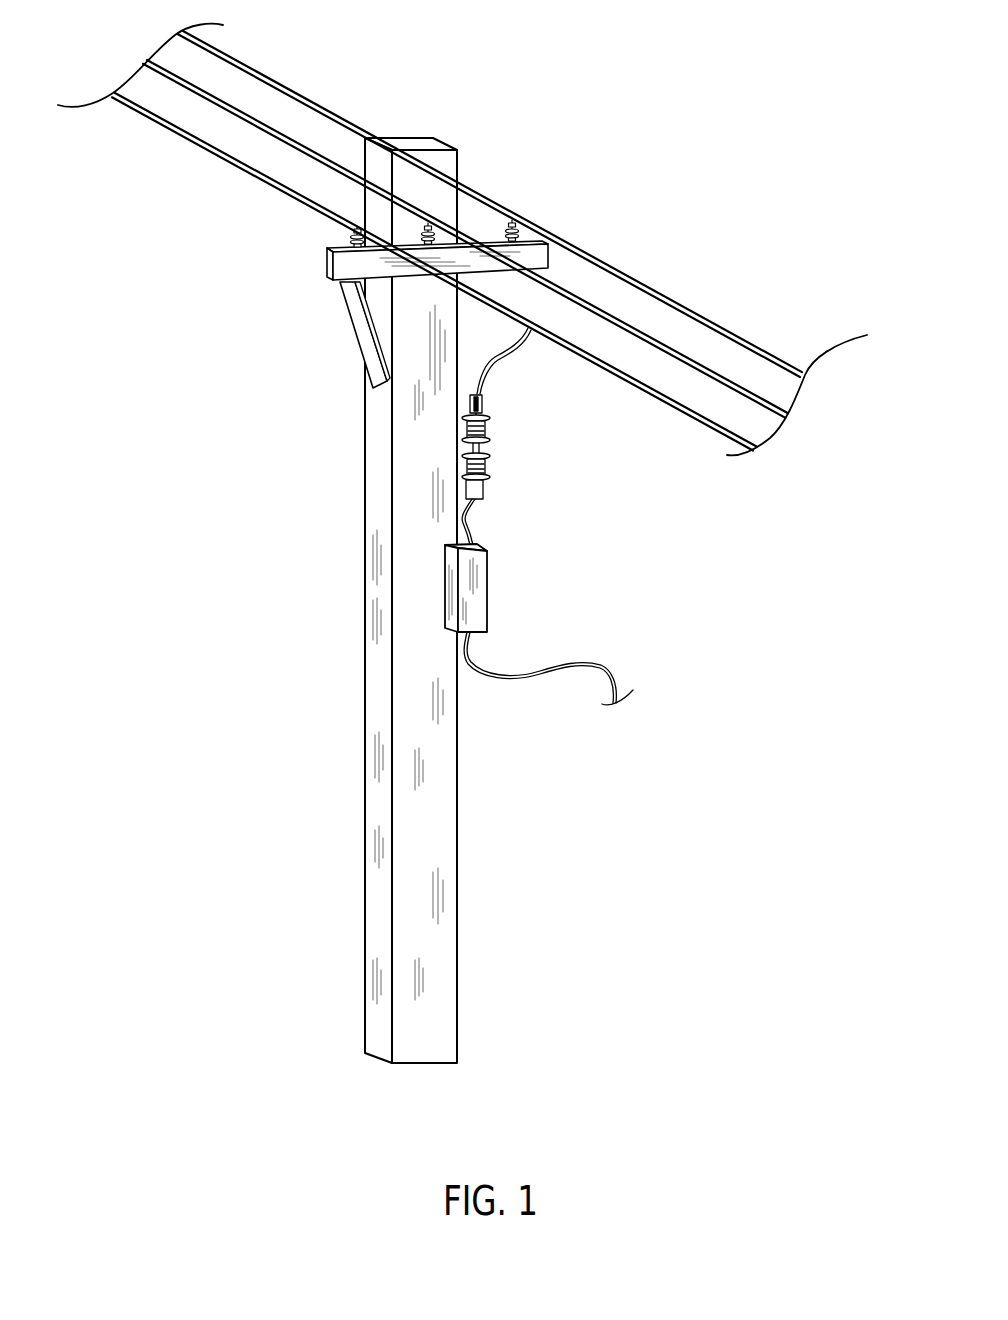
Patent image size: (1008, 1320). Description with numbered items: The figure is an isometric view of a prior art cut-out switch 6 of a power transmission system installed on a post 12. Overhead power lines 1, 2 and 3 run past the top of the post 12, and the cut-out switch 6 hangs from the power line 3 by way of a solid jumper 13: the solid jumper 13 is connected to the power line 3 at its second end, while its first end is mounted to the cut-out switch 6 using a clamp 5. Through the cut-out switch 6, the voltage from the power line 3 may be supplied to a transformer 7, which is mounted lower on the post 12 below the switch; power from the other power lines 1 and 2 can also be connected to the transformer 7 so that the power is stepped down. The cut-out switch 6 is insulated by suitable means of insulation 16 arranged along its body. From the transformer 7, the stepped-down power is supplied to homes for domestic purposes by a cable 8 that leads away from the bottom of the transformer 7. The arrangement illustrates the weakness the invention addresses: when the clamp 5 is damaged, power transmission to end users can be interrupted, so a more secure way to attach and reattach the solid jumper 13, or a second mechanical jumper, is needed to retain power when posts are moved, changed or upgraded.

The power line 1 is at (619, 270).
The power line 2 is at (625, 328).
The power line 3 is at (686, 410).
The clamp 5 is at (482, 403).
The cut-out switch 6 is at (543, 455).
The transformer 7 is at (487, 573).
The cable 8 is at (615, 677).
The post 12 is at (412, 583).
The solid jumper 13 is at (490, 362).
The means of insulation 16 is at (485, 465).